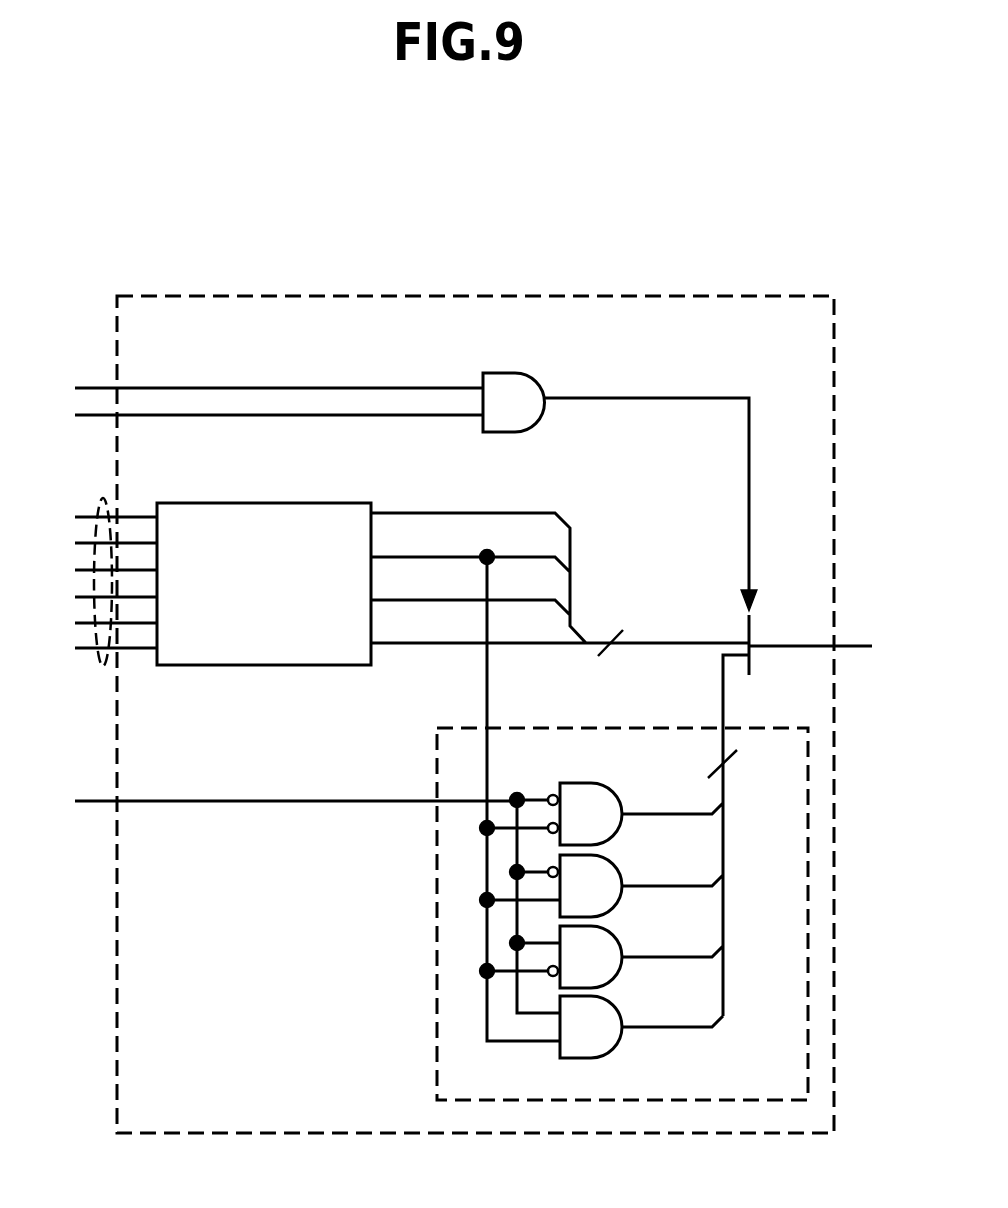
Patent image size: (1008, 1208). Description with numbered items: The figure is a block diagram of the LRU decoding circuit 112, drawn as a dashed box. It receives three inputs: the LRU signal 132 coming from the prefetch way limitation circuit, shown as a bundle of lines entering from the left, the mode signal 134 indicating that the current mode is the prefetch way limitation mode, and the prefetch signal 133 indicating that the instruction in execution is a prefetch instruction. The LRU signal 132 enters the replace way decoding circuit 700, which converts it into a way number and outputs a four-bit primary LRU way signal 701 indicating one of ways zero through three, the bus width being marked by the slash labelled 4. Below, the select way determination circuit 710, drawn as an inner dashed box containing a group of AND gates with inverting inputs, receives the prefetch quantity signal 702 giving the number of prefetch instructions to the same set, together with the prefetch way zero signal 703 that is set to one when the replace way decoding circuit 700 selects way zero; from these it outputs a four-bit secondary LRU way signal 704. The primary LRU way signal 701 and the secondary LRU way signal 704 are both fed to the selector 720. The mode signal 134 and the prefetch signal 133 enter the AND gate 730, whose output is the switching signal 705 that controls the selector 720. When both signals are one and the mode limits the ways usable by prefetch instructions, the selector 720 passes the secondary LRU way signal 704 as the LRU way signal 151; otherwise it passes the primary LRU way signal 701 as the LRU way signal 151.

The LRU decoding circuit 112 is at (613, 294).
The mode signal 134 is at (358, 388).
The prefetch signal 133 is at (463, 420).
The AND gate 730 is at (537, 373).
The switching signal 705 is at (670, 397).
The replace way decoding circuit 700 is at (355, 500).
The LRU signal 132 is at (105, 657).
The primary LRU way signal 701 is at (655, 641).
The bus width indicator 4 is at (679, 688).
The selector 720 is at (753, 625).
The LRU way signal 151 is at (845, 643).
The secondary LRU way signal 704 is at (722, 710).
The prefetch quantity signal 702 is at (352, 801).
The prefetch way 0 signal 703 is at (490, 768).
The select way determination circuit 710 is at (437, 885).